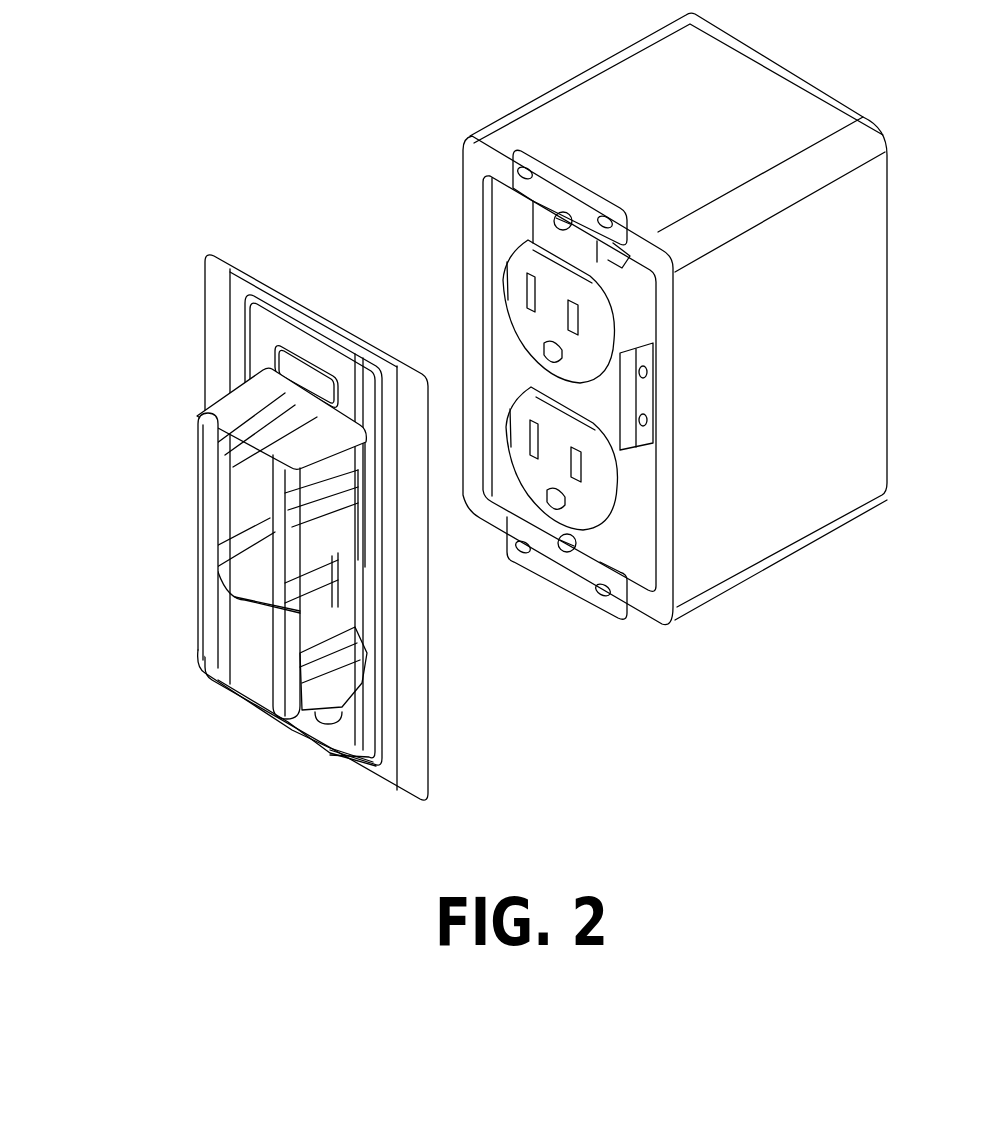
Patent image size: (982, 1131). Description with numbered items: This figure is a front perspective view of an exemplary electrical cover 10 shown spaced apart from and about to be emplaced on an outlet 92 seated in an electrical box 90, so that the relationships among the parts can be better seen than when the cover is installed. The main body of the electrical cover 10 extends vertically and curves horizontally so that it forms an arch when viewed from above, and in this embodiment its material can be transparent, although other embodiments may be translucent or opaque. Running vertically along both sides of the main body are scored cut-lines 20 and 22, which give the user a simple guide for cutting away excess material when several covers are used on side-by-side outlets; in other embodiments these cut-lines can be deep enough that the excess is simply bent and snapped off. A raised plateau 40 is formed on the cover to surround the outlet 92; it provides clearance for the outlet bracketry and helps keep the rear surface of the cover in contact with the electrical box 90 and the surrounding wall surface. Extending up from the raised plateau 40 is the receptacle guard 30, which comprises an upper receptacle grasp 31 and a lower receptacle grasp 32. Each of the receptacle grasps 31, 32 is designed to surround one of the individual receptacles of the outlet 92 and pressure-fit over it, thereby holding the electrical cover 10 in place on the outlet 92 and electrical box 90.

The electrical cover 10 is at (685, 857).
The scored cut-line 20 is at (237, 247).
The scored cut-line 22 is at (400, 348).
The receptacle guard 30 is at (215, 529).
The upper receptacle grasp 31 is at (183, 461).
The lower receptacle grasp 32 is at (174, 608).
The raised plateau 40 is at (288, 292).
The electrical box 90 is at (750, 113).
The outlet 92 is at (562, 190).